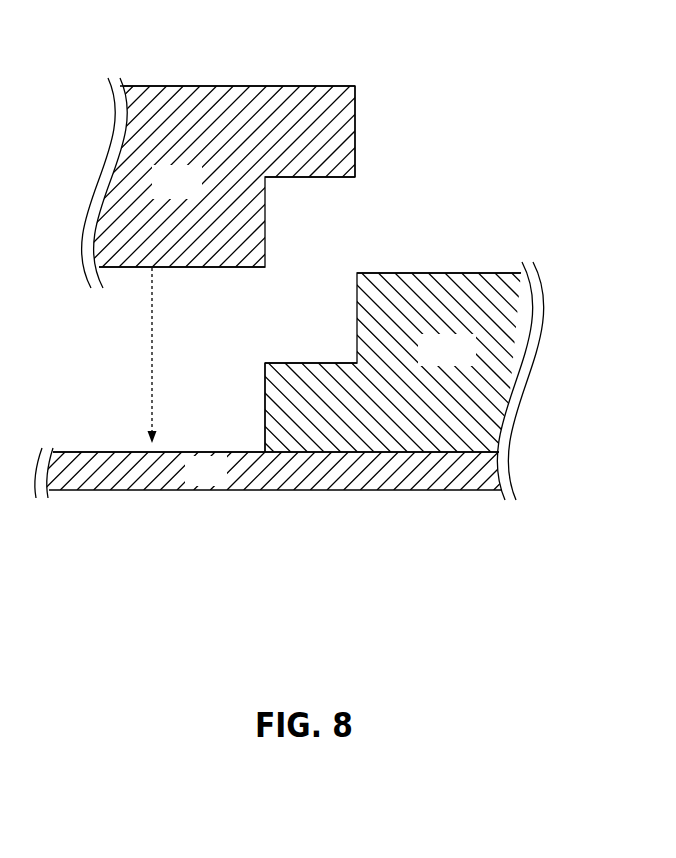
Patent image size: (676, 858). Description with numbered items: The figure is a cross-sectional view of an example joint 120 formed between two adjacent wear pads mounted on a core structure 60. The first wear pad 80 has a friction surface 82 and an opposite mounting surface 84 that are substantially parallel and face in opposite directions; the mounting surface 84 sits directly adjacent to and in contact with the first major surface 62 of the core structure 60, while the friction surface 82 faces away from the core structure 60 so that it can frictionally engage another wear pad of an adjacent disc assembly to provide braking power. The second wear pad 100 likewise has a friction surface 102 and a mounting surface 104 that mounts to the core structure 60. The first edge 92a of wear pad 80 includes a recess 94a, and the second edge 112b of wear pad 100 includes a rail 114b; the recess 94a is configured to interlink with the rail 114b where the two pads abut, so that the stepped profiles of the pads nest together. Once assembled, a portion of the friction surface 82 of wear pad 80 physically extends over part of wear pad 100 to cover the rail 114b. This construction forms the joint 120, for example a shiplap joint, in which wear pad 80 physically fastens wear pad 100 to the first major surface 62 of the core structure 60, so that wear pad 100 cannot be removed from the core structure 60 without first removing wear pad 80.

The wear pad 80 is at (188, 193).
The friction surface 82 is at (226, 74).
The mounting surface 84 is at (224, 278).
The first edge 92a is at (357, 133).
The recess 94a is at (300, 203).
The joint 120 is at (397, 191).
The wear pad 100 is at (467, 361).
The friction surface 102 is at (463, 262).
The mounting surface 104 is at (395, 463).
The second edge 112b is at (266, 421).
The rail 114b is at (307, 390).
The core structure 60 is at (218, 481).
The first major surface 62 is at (111, 442).